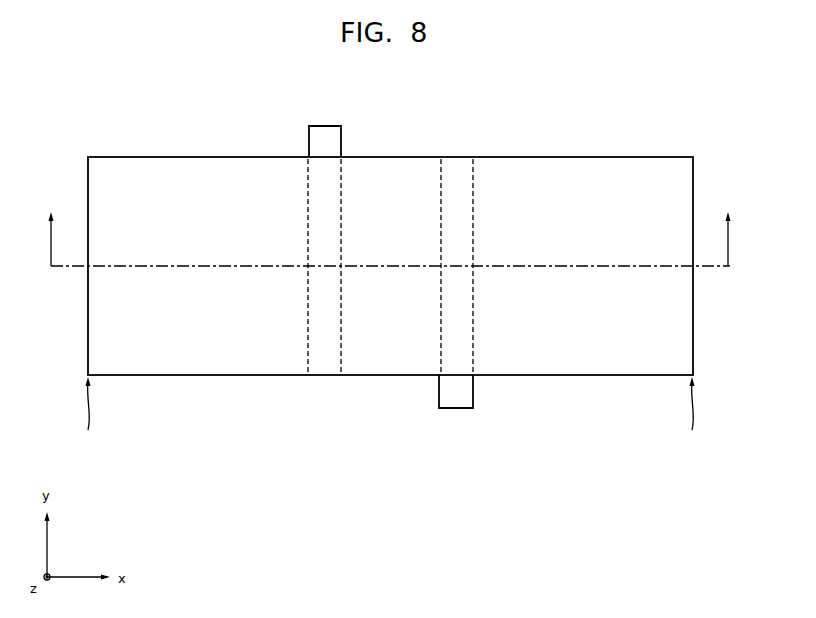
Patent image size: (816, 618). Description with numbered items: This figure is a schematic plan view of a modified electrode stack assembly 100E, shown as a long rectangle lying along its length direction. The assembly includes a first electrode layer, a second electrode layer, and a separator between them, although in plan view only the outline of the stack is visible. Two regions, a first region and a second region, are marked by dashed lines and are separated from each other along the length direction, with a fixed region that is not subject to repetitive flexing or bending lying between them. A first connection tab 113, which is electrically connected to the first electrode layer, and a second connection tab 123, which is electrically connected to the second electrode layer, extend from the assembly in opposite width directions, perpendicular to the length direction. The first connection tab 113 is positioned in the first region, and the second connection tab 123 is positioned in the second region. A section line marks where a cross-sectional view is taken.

The electrode stack assembly 100E is at (626, 110).
The second connection tab 123 is at (325, 139).
The first connection tab 113 is at (456, 402).